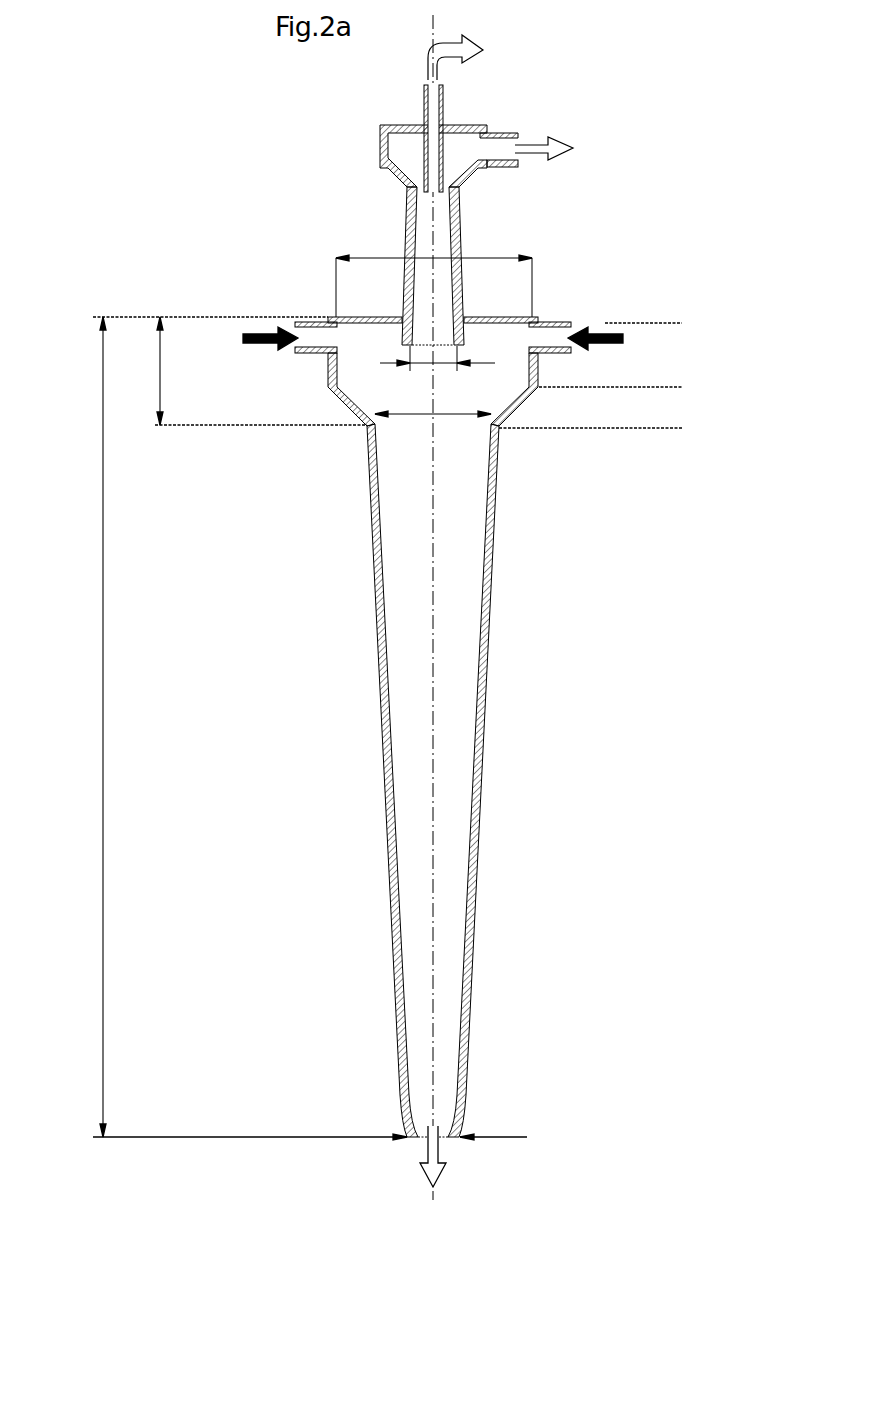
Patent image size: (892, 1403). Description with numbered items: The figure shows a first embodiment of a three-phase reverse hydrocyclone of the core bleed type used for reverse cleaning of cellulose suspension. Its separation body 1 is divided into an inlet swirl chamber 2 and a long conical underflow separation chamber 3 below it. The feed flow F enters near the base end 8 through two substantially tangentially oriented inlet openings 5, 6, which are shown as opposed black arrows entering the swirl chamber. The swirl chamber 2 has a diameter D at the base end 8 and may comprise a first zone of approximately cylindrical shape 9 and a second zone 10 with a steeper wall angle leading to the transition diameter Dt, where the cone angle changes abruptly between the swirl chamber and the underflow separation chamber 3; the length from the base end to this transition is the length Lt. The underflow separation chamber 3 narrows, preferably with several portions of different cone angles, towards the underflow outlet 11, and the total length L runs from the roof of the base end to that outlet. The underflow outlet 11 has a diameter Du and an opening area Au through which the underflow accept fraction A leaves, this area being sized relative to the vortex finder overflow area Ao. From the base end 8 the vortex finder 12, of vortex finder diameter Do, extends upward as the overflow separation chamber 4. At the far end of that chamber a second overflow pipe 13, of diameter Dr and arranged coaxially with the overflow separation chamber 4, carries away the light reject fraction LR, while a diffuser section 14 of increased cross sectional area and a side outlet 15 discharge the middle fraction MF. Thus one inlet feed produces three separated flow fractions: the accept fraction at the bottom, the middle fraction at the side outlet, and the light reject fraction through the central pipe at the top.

The separation body 1 is at (722, 323).
The inlet swirl chamber 2 is at (367, 373).
The underflow separation chamber 3 is at (453, 602).
The overflow separation chamber 4 is at (429, 214).
The tangentially oriented inlet opening 5 is at (330, 340).
The tangentially oriented inlet opening 6 is at (533, 340).
The base end 8 is at (488, 317).
The cylindrical shape zone 9 is at (682, 323).
The second zone 10 is at (682, 388).
The underflow outlet 11 is at (442, 1139).
The vortex finder 12 is at (462, 210).
The second overflow pipe 13 is at (424, 96).
The diffuser section 14 is at (407, 146).
The outlet 15 is at (470, 152).
The total length L is at (301, 727).
The length to transition diameter Lt is at (250, 371).
The swirl chamber diameter D is at (383, 258).
The vortex finder diameter Do is at (443, 352).
The transition diameter Dt is at (433, 402).
The underflow outlet diameter Du is at (503, 1137).
The second overflow pipe diameter Dr is at (427, 192).
The vortex finder overflow area Ao is at (423, 343).
The underflow opening area Au is at (421, 1138).
The underflow accept fraction A is at (433, 1219).
The feed flow F is at (433, 341).
The light reject fraction LR is at (473, 57).
The middle fraction MF is at (564, 149).